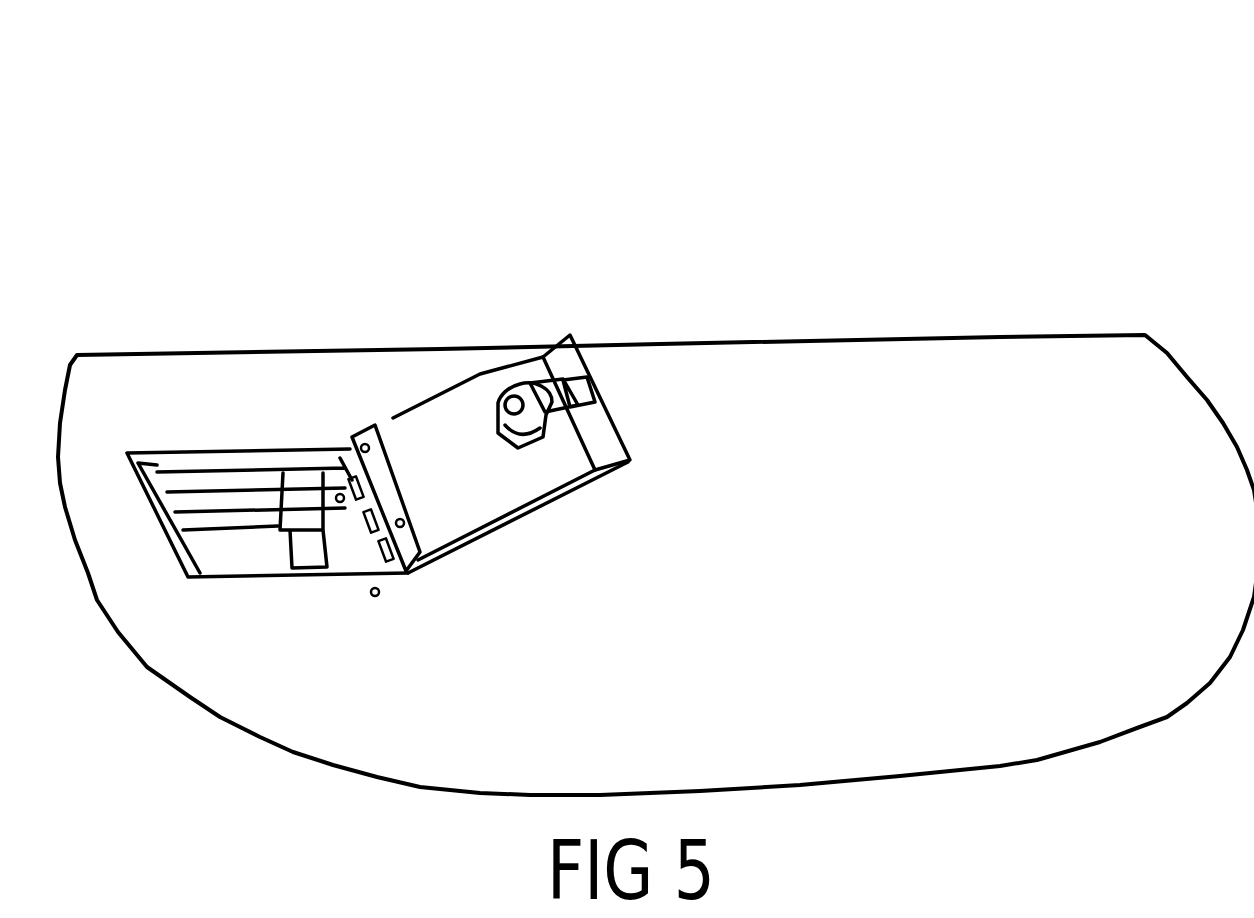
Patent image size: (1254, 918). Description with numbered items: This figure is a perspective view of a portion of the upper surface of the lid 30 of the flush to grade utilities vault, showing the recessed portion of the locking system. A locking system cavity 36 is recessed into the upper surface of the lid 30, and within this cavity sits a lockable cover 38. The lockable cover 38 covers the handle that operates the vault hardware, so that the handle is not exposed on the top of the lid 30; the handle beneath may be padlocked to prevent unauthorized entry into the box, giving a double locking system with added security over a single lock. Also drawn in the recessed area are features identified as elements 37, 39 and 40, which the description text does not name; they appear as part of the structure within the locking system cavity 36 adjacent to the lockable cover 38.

The lid 30 is at (656, 565).
The locking system cavity 36 is at (248, 192).
The vent grille 37 is at (248, 533).
The lockable cover 38 is at (618, 405).
The latch 39 is at (530, 377).
The latch catch 40 is at (309, 544).